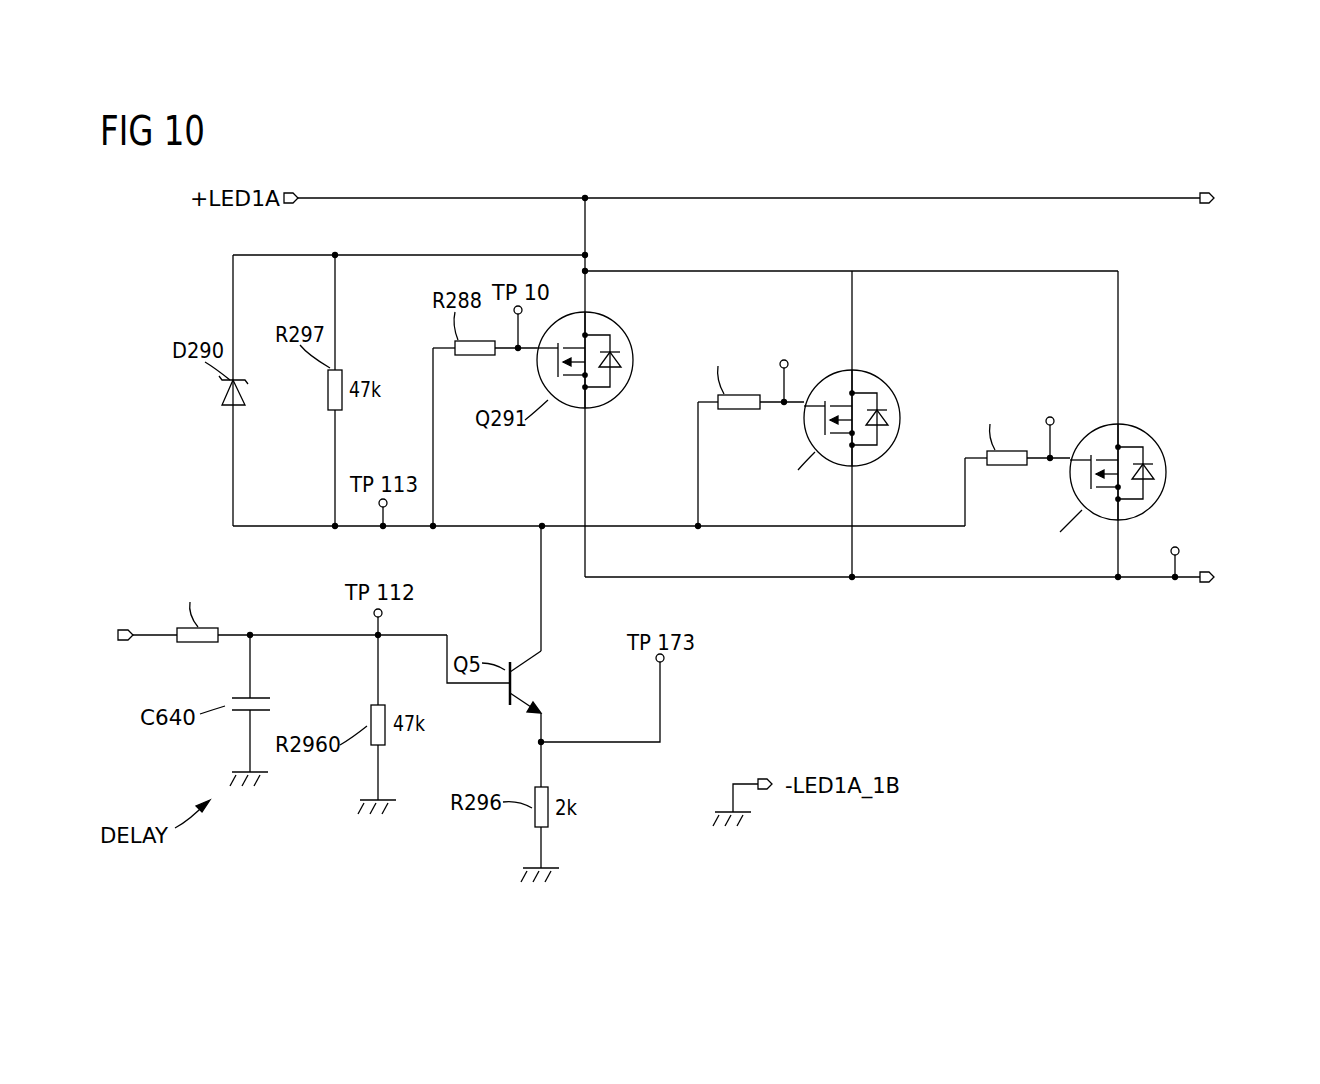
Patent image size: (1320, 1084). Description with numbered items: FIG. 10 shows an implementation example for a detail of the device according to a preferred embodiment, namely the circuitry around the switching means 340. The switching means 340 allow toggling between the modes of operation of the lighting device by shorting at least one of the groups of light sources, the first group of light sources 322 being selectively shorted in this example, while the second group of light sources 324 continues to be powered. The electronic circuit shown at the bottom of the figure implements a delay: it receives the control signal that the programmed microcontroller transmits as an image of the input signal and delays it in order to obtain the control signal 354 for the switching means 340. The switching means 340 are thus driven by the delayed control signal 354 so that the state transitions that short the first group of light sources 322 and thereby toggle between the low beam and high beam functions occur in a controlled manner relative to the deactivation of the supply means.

The first group of light sources 322 is at (1205, 194).
The switching means 340 is at (1162, 292).
The second group of light sources 324 is at (1212, 572).
The control signal 354 is at (440, 628).